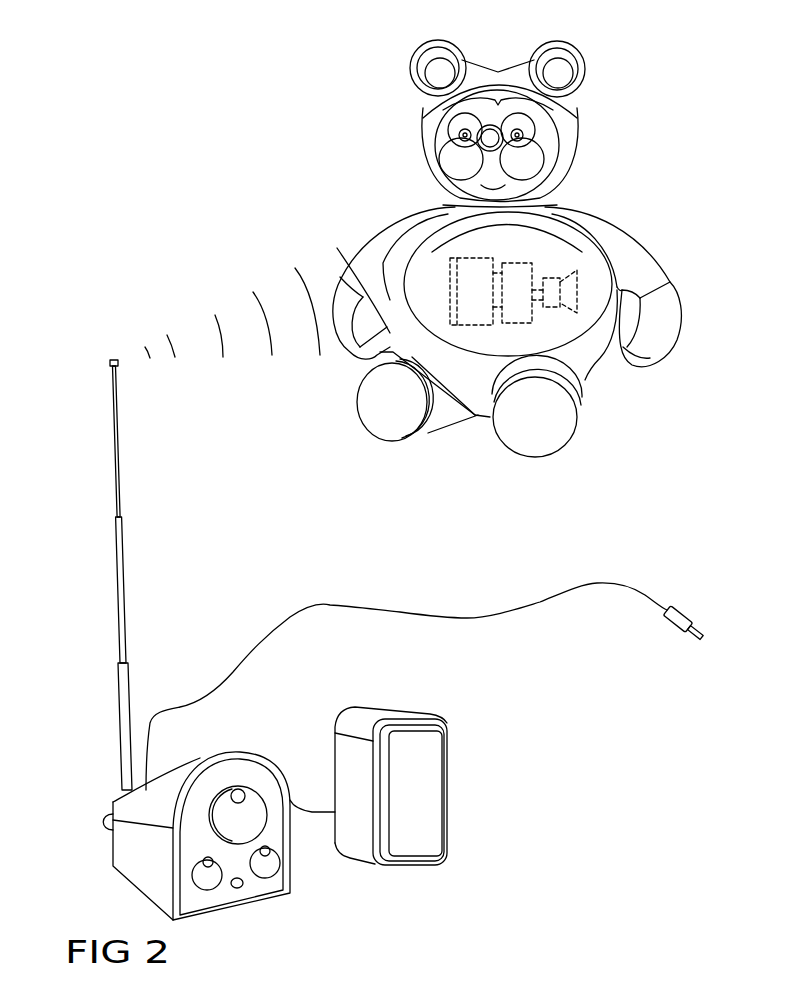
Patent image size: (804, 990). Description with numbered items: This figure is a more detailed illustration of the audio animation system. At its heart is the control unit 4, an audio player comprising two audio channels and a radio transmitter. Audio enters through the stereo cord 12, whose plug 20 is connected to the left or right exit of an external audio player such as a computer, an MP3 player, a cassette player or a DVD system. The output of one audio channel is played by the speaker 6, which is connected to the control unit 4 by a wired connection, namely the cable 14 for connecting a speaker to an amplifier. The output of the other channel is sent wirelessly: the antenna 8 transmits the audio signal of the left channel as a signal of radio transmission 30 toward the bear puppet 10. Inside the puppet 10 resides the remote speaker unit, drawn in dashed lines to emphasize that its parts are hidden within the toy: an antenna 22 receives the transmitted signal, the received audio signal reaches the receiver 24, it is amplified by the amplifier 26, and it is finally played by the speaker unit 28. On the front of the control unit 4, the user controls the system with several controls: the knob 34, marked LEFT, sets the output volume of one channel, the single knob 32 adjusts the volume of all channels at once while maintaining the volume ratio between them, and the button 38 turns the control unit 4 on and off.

The control unit 4 is at (195, 767).
The speaker 6 is at (381, 708).
The antenna 8 is at (125, 525).
The bear puppet 10 is at (618, 242).
The stereo cord 12 is at (323, 603).
The cable 14 is at (309, 807).
The plug 20 is at (690, 616).
The antenna 22 is at (450, 257).
The receiver 24 is at (470, 265).
The amplifier 26 is at (520, 268).
The speaker unit 28 is at (550, 285).
The signal of radio transmission 30 is at (212, 318).
The knob 32 is at (250, 808).
The knob 34 is at (267, 861).
The button 38 is at (245, 888).